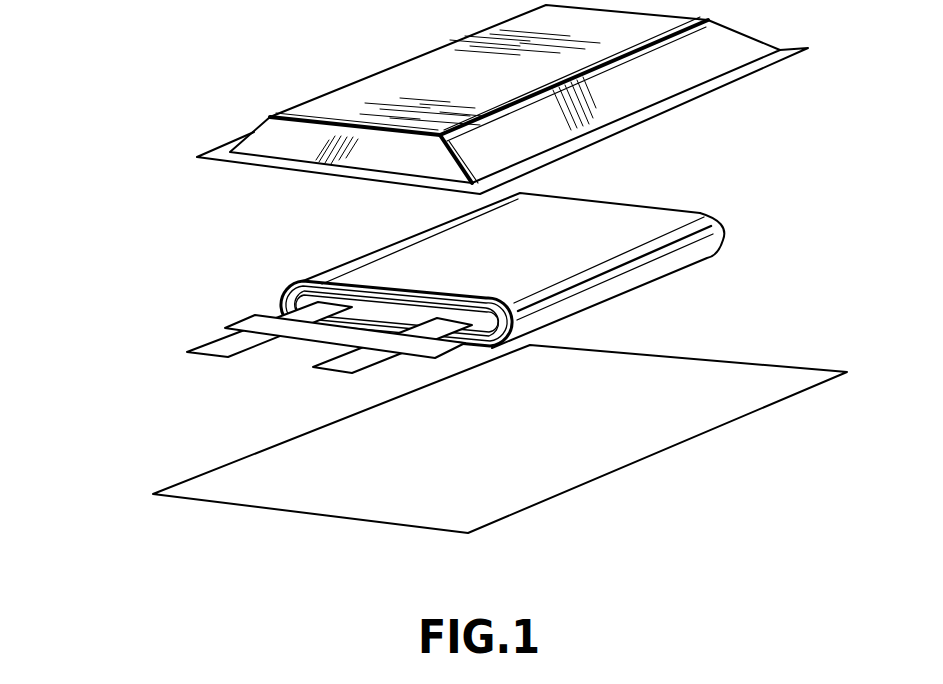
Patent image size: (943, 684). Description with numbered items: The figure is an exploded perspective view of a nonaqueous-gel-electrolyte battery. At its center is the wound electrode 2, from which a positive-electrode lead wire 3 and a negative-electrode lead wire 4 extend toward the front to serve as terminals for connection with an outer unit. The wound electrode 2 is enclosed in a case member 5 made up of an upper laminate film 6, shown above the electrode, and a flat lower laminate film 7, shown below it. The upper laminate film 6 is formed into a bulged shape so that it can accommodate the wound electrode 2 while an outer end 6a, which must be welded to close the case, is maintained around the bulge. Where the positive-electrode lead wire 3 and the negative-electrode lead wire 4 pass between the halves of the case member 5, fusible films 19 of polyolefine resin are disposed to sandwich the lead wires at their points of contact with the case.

The wound electrode 2 is at (705, 257).
The positive-electrode lead wire 3 is at (214, 357).
The negative-electrode lead wire 4 is at (320, 368).
The case member 5 is at (112, 208).
The upper laminate film 6 is at (463, 118).
The outer end 6a is at (742, 76).
The lower laminate film 7 is at (188, 485).
The fusible films 19 is at (256, 317).